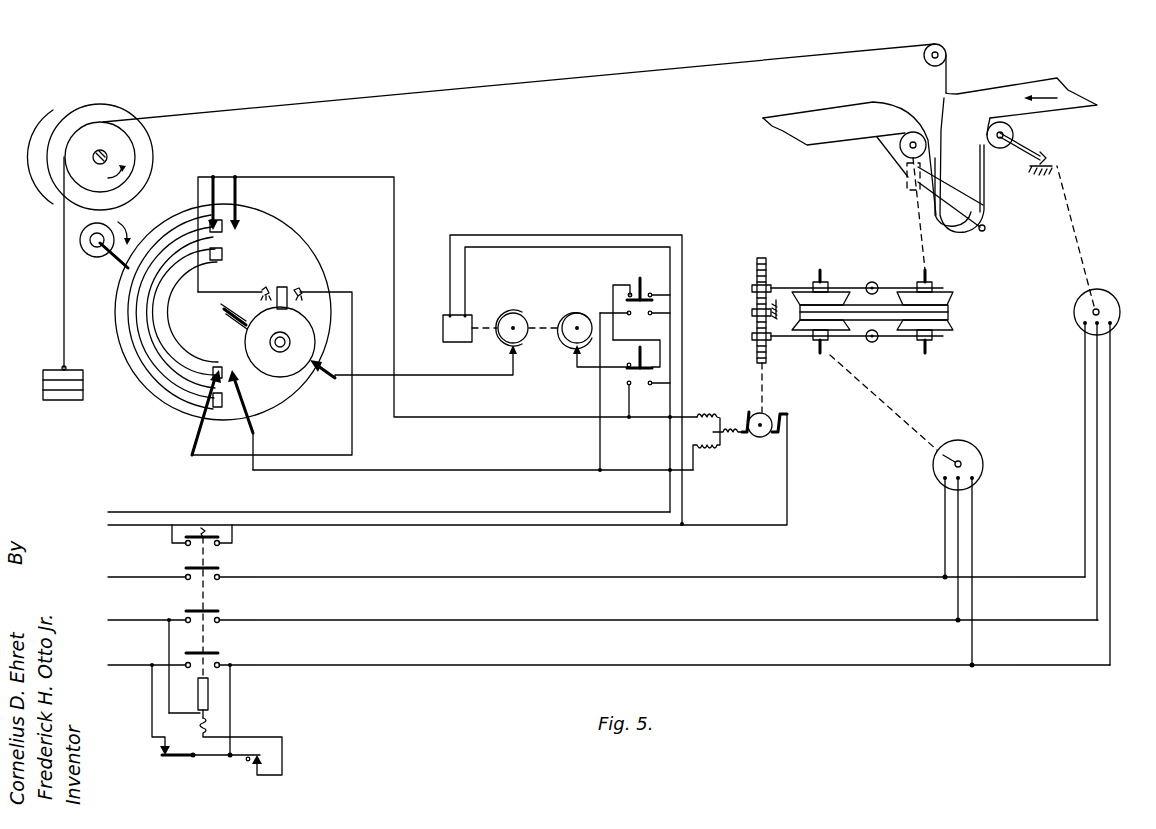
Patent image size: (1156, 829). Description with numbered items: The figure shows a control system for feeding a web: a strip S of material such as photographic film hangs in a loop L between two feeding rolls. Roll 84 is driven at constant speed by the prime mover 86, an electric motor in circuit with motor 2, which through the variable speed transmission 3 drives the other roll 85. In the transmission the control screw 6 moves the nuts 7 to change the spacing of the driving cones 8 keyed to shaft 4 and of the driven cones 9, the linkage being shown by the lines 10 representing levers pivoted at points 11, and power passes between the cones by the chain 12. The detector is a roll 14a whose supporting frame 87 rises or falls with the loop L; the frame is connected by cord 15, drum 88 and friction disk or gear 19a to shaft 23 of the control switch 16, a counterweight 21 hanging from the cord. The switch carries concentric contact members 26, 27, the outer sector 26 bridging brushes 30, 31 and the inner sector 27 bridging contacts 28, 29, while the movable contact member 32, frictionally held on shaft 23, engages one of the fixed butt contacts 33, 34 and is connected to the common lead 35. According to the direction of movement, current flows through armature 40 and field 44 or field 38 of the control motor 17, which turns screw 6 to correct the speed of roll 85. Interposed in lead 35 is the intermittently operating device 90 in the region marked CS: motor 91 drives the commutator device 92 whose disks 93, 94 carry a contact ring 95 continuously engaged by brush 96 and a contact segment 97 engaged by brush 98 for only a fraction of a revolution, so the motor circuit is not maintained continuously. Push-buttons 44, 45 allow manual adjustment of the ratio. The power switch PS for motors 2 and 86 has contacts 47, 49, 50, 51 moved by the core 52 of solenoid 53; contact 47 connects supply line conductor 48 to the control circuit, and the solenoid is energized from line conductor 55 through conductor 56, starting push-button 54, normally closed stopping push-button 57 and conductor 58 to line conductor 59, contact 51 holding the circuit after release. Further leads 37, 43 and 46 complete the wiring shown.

The cord 15 is at (528, 84).
The drum 88 is at (130, 155).
The friction disk or gear 19a is at (143, 178).
The counterweight 21 is at (43, 385).
The shaft 23 is at (110, 262).
The control switch 16 is at (338, 229).
The outer contact sector 26 is at (163, 373).
The inner contact sector 27 is at (175, 347).
The brush 30 is at (216, 185).
The brush 31 is at (238, 194).
The conductor 43 is at (470, 418).
The fixed butt contact 33 is at (262, 290).
The fixed butt contact 34 is at (298, 289).
The movable contact member 32 is at (300, 330).
The brush 28 is at (197, 434).
The brush 29 is at (248, 420).
The conductor 37 is at (484, 470).
The common lead 35 is at (432, 378).
The control switch CS is at (612, 287).
The motor 91 is at (462, 314).
The intermittently operating circuit controlling device 90 is at (590, 302).
The disk 93 is at (527, 335).
The contact segment 97 is at (498, 340).
The commutator device 92 is at (560, 370).
The brush 98 is at (515, 365).
The contact ring 95 is at (586, 322).
The disk 94 is at (566, 345).
The brush 96 is at (580, 368).
The field 44 is at (648, 275).
The push-button 45 is at (640, 357).
The field 38 is at (712, 448).
The armature 40 is at (768, 414).
The control motor 17 is at (773, 465).
The conductor 46 is at (132, 511).
The supply line conductor 48 is at (132, 526).
The constant speed shaft 4 is at (272, 526).
The contact 47 is at (209, 597).
The contact 49 is at (220, 569).
The contact 50 is at (220, 612).
The power switch PS is at (295, 611).
The contact 51 is at (220, 654).
The line conductor 59 is at (126, 621).
The line conductor 55 is at (125, 666).
The conductor 56 is at (151, 725).
The core or armature member 52 is at (209, 694).
The solenoid 53 is at (209, 727).
The starting push-button 54 is at (170, 758).
The stopping push-button 57 is at (248, 762).
The conductor 58 is at (283, 753).
The control screw 6 is at (767, 262).
The nuts 7 is at (752, 288).
The levers 10 is at (893, 287).
The driving cones 8 is at (803, 297).
The variable speed transmission 3 is at (870, 284).
The pivot points 11 is at (866, 288).
The driven cones 9 is at (953, 297).
The chain 12 is at (950, 312).
The electric motor 2 is at (972, 450).
The prime mover 86 is at (1108, 296).
The strip S is at (843, 110).
The loop L is at (985, 188).
The sheet-feeding roll 85 is at (907, 150).
The supporting frame 87 is at (985, 215).
The roll 14a is at (982, 232).
The roll 84 is at (1013, 133).